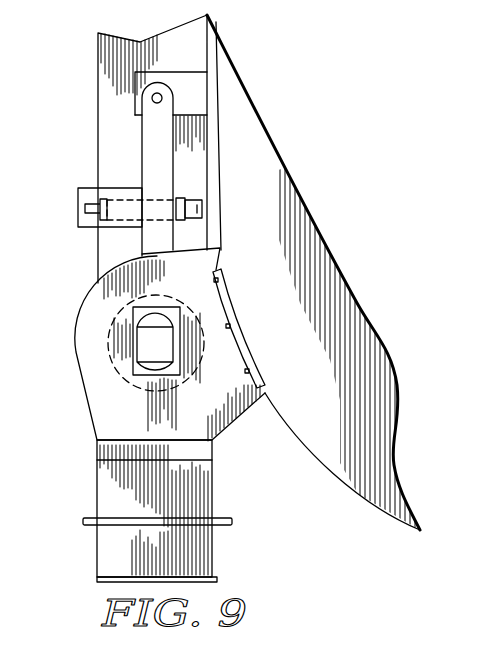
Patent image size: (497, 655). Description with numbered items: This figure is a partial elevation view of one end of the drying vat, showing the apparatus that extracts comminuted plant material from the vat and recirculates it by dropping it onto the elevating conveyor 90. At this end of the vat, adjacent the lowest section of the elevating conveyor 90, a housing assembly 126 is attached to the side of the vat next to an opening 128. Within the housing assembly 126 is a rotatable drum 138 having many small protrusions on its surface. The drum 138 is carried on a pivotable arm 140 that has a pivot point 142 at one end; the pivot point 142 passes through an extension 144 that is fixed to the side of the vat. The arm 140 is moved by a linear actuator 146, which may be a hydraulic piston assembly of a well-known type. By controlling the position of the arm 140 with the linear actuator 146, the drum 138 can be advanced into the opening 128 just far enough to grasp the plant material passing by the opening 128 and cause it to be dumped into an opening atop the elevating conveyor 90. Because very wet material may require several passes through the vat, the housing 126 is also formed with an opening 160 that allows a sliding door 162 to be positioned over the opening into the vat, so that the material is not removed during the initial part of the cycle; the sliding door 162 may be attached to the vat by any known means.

The elevating conveyor 90 is at (97, 83).
The housing assembly 126 is at (75, 342).
The opening 128 is at (253, 368).
The drum 138 is at (198, 373).
The pivotable arm 140 is at (142, 170).
The pivot point 142 is at (174, 91).
The extension 144 is at (194, 72).
The linear actuator 146 is at (77, 199).
The opening 160 is at (224, 276).
The sliding door 162 is at (228, 320).